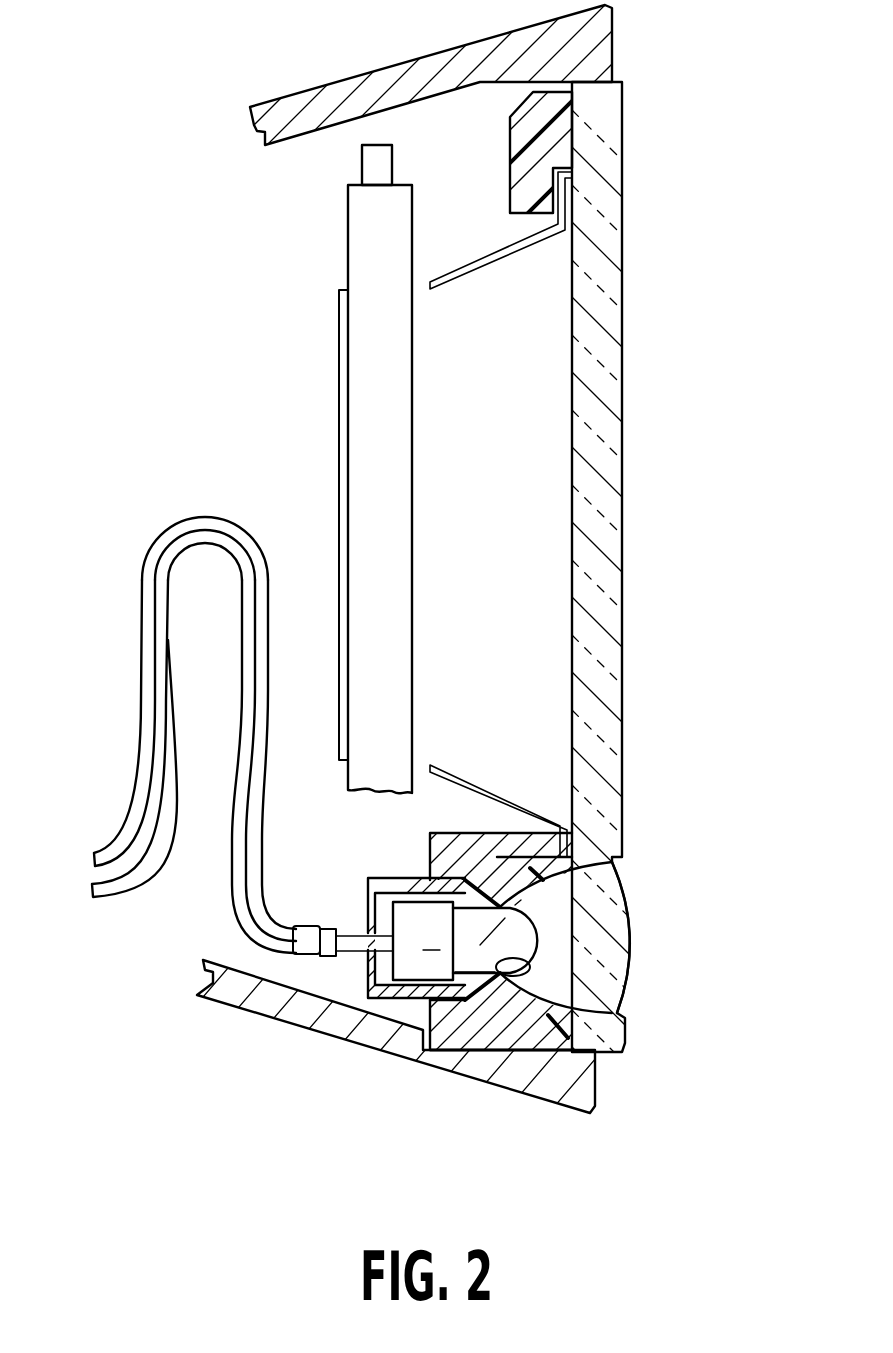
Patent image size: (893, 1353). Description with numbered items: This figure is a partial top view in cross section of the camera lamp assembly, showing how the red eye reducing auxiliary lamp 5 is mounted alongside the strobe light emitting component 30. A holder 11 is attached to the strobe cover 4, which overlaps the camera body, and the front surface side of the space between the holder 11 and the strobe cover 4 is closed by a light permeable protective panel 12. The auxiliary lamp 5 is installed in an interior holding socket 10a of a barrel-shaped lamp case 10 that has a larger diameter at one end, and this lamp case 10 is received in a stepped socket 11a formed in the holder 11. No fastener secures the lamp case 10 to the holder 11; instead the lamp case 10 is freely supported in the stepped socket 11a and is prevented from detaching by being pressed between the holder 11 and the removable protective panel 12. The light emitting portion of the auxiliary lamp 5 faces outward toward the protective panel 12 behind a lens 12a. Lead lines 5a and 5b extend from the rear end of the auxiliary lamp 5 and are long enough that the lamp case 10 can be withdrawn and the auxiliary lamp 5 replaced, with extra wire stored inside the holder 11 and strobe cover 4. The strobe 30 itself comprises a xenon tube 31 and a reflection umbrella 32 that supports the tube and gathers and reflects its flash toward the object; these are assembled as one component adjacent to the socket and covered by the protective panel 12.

The strobe cover 4 is at (322, 101).
The auxiliary lamp 5 is at (545, 928).
The lead line 5a is at (153, 713).
The lead line 5b is at (167, 827).
The lamp case 10 is at (548, 1047).
The interior holding socket 10a is at (545, 978).
The holder 11 is at (550, 145).
The stepped socket 11a is at (468, 990).
The protective panel 12 is at (613, 392).
The lens 12a is at (623, 888).
The strobe light emitting component 30 is at (651, 589).
The xenon tube 31 is at (365, 365).
The reflection umbrella 32 is at (548, 660).